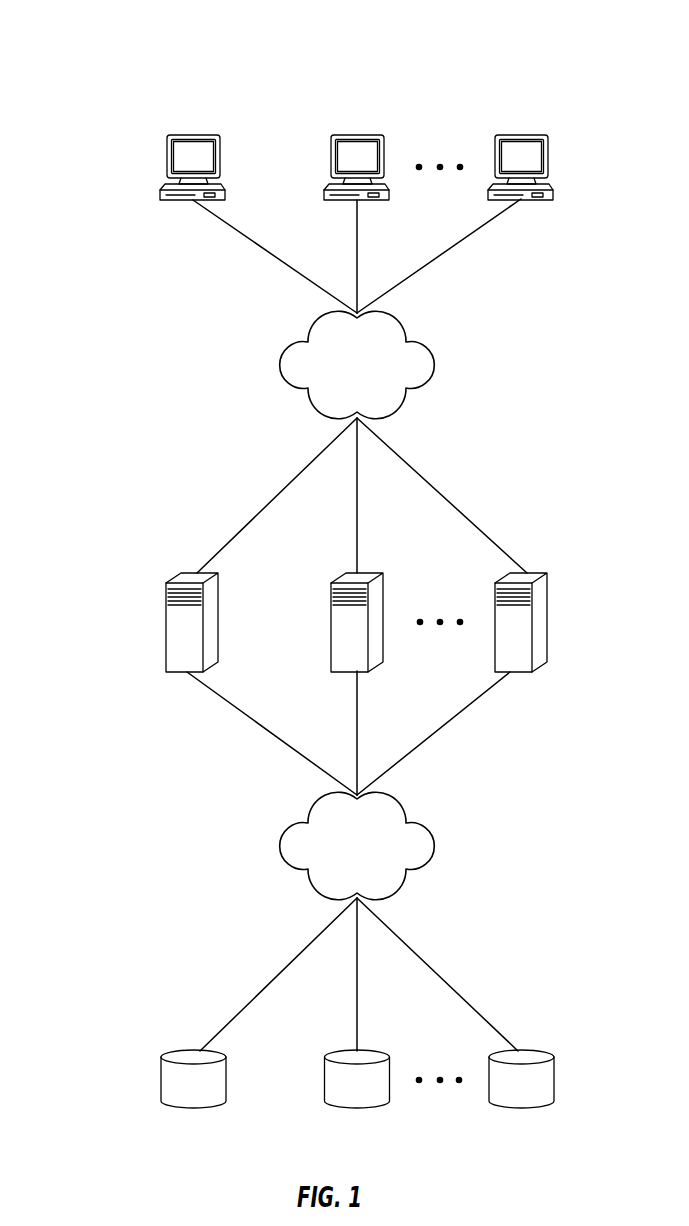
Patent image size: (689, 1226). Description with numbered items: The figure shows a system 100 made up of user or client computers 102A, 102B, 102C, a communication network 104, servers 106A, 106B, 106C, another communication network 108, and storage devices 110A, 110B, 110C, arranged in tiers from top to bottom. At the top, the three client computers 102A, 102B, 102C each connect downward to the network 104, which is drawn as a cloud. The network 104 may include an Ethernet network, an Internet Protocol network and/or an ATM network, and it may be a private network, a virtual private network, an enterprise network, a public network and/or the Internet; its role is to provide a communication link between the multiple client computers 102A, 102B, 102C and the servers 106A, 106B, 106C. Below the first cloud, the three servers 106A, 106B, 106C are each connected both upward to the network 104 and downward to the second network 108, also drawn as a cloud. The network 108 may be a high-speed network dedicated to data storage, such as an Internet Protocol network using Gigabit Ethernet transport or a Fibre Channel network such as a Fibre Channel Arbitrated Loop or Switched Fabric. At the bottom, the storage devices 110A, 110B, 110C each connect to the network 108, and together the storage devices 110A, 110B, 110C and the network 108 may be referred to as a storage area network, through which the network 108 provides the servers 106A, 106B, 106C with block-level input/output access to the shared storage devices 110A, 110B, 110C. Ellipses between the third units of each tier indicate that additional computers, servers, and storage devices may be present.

The system 100 is at (124, 42).
The user or client computer 102A is at (193, 133).
The user or client computer 102B is at (357, 133).
The user or client computer 102C is at (523, 133).
The communication network 104 is at (281, 364).
The server 106A is at (193, 572).
The server 106B is at (352, 572).
The server 106C is at (538, 572).
The communication network 108 is at (281, 845).
The storage device 110A is at (172, 1051).
The storage device 110B is at (338, 1051).
The storage device 110C is at (540, 1051).